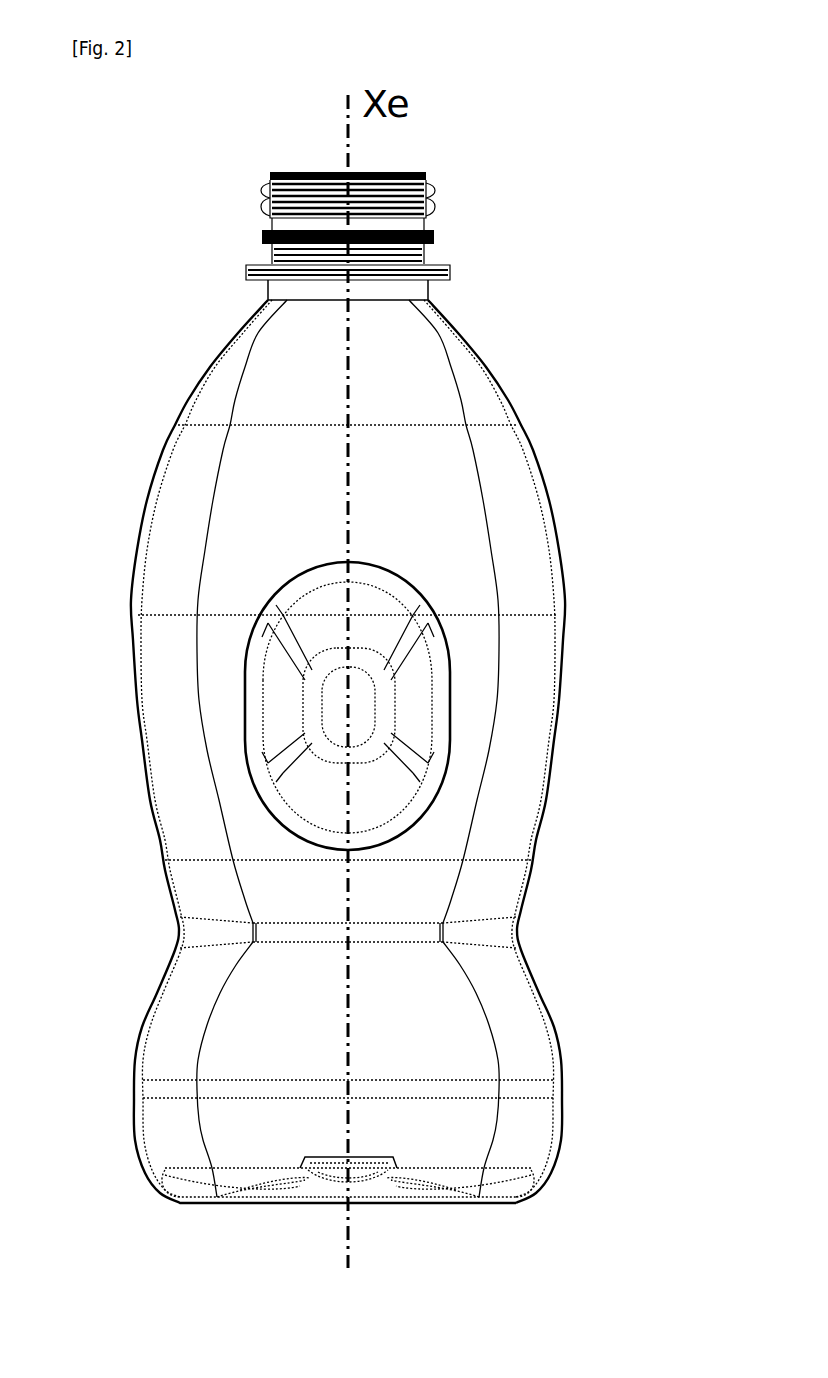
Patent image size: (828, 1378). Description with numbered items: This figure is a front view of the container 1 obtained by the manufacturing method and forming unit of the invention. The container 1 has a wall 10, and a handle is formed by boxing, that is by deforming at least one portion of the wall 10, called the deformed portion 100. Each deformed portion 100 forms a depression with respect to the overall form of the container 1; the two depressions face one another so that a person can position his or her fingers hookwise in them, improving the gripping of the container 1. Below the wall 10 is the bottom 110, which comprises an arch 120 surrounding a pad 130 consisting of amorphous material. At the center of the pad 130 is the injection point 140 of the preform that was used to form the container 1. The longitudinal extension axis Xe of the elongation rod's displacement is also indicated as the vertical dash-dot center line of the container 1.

The container 1 is at (506, 228).
The wall 10 is at (501, 388).
The deformed portion 100 is at (410, 705).
The bottom 110 is at (263, 1232).
The arch 120 is at (455, 1187).
The pad 130 is at (385, 1173).
The injection point 140 is at (357, 1173).